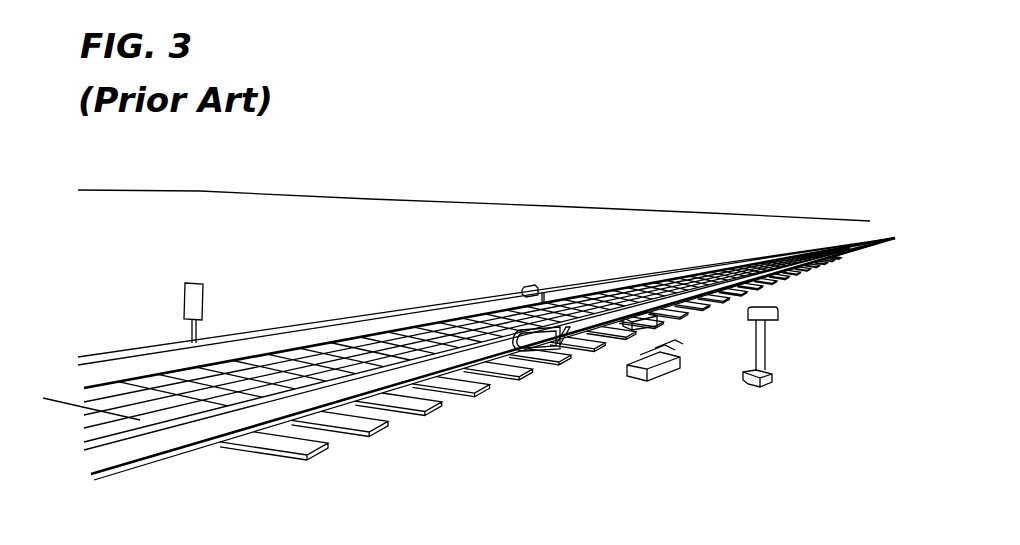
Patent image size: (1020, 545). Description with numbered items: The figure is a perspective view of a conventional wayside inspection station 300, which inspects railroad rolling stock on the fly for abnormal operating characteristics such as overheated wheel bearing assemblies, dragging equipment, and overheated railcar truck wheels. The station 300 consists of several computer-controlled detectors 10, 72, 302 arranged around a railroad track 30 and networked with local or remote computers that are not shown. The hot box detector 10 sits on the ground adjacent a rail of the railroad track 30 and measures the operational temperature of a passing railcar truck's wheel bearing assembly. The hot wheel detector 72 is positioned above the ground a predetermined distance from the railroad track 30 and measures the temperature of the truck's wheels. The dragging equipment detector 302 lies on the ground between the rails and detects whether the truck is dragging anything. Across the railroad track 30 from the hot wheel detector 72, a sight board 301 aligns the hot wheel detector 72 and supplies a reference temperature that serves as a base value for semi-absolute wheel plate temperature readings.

The wayside inspection station 300 is at (801, 186).
The railroad track 30 is at (689, 283).
The dragging equipment detector 302 is at (508, 286).
The hot box detector 10 is at (521, 360).
The sight board 301 is at (170, 302).
The hot wheel detector 72 is at (790, 310).